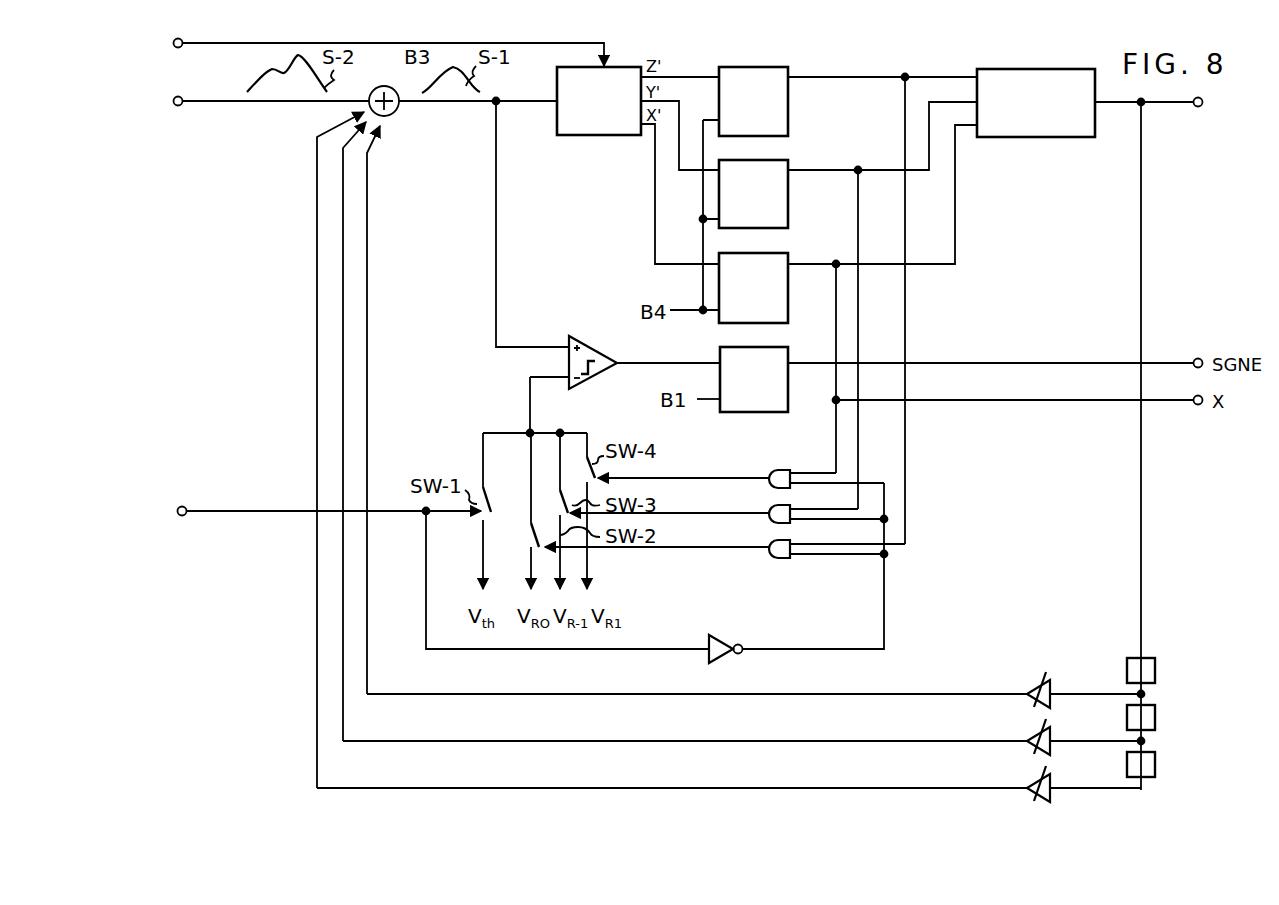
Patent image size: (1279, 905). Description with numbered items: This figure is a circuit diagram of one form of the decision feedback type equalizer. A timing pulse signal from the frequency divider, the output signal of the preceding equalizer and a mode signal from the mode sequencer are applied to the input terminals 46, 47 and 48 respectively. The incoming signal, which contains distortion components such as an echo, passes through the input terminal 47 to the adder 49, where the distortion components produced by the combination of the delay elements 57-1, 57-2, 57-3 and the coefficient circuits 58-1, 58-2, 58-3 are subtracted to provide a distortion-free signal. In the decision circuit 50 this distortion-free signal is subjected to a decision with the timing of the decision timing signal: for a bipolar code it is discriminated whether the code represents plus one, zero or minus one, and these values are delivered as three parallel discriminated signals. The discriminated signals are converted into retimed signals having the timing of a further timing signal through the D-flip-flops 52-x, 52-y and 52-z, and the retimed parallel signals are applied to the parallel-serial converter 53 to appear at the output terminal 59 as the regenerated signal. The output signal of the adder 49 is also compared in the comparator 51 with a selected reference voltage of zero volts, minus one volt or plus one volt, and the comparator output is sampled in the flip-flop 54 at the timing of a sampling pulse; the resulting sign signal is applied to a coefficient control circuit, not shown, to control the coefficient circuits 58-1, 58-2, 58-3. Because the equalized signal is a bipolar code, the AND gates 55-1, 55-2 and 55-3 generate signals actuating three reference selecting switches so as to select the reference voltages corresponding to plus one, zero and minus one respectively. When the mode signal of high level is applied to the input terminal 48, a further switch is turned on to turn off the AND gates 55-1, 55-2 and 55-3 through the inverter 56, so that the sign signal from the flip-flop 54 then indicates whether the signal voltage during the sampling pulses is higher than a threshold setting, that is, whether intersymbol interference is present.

The input terminal 46 is at (175, 46).
The input terminal 47 is at (175, 104).
The input terminal 48 is at (182, 506).
The adder 49 is at (395, 112).
The decision circuit 50 is at (606, 135).
The comparator 51 is at (589, 328).
The D-flip-flop 52-z is at (789, 111).
The D-flip-flop 52-y is at (788, 166).
The D-flip-flop 52-x is at (788, 260).
The parallel-serial converter 53 is at (1045, 137).
The flip-flop 54 is at (789, 398).
The AND gate 55-1 is at (774, 466).
The AND gate 55-2 is at (772, 515).
The AND gate 55-3 is at (772, 551).
The inverter 56 is at (724, 635).
The delay element 57-1 is at (1156, 670).
The delay element 57-2 is at (1156, 717).
The delay element 57-3 is at (1156, 764).
The coefficient circuit 58-1 is at (1033, 684).
The coefficient circuit 58-2 is at (1028, 733).
The coefficient circuit 58-3 is at (1028, 780).
The output terminal 59 is at (1203, 102).